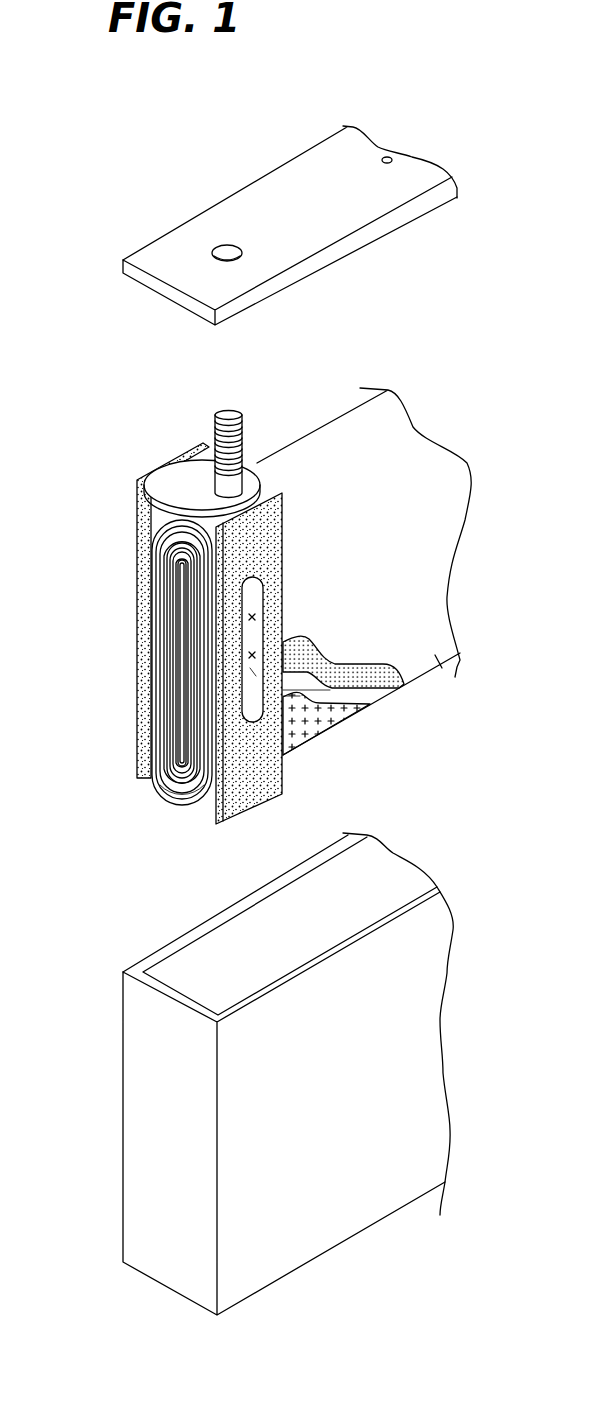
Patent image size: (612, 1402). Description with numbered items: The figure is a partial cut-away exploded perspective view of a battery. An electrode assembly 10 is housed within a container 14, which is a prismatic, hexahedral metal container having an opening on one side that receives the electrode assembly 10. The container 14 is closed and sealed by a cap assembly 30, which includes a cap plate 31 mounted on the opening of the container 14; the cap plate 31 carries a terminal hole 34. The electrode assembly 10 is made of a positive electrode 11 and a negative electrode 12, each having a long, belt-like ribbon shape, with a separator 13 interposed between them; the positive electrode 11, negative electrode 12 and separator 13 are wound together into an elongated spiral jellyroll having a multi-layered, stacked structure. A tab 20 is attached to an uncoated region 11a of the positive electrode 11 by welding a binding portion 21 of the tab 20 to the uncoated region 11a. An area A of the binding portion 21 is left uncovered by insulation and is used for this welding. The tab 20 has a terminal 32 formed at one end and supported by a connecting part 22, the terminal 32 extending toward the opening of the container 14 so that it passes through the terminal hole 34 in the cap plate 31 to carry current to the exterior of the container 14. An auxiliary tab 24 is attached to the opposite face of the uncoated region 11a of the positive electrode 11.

The electrode assembly 10 is at (306, 391).
The positive electrode 11 is at (393, 678).
The uncoated region 11a is at (184, 790).
The negative electrode 12 is at (313, 722).
The separator 13 is at (433, 655).
The container 14 is at (158, 1112).
The tab 20 is at (126, 512).
The binding portion 21 is at (140, 641).
The connecting part 22 is at (175, 482).
The auxiliary tab 24 is at (218, 825).
The cap assembly 30 is at (260, 165).
The cap plate 31 is at (337, 213).
The terminal 32 is at (214, 418).
The terminal hole 34 is at (233, 247).
The area of the binding portion A is at (253, 672).